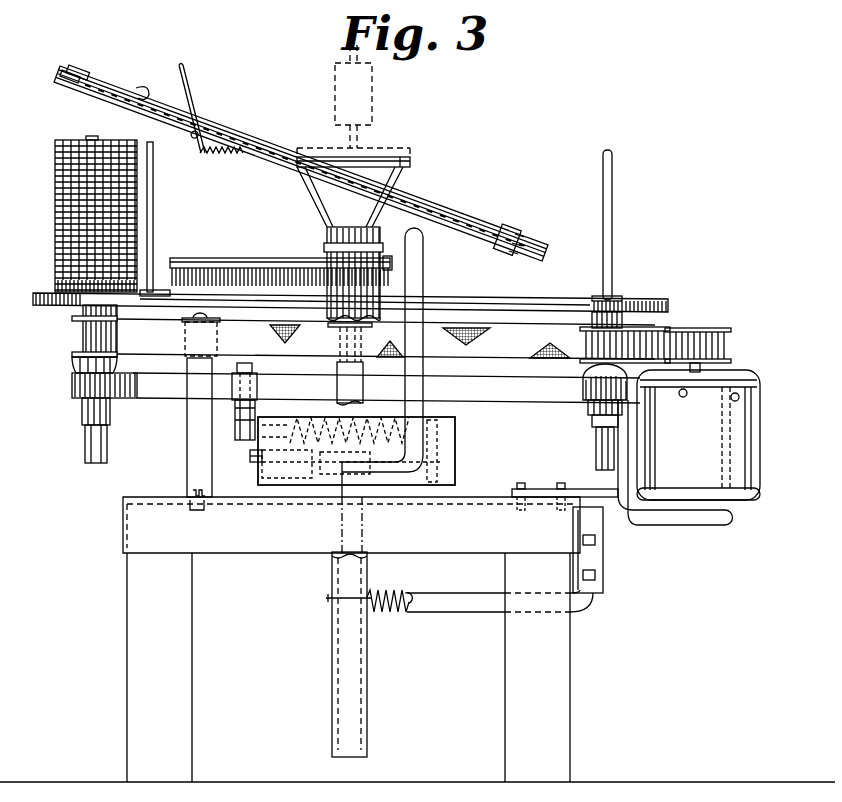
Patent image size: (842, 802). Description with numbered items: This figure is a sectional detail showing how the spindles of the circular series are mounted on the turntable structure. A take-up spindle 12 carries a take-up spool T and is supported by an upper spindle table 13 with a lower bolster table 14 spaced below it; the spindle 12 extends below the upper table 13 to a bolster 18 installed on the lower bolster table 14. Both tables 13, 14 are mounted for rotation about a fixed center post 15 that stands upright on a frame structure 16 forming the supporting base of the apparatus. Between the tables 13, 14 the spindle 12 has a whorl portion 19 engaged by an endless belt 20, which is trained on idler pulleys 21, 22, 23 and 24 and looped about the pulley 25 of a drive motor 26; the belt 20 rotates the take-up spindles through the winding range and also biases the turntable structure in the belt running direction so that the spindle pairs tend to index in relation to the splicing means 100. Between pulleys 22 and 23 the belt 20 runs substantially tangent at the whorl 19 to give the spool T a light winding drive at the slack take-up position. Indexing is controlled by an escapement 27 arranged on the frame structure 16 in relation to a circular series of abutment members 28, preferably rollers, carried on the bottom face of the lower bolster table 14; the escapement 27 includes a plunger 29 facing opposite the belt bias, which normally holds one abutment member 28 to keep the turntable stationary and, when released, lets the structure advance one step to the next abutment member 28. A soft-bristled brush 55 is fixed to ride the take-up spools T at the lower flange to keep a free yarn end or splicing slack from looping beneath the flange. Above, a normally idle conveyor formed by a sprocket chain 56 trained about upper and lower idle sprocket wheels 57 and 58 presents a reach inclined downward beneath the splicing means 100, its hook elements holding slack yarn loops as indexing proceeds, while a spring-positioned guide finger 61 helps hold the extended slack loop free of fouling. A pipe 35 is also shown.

The take-up spool T is at (56, 207).
The take-up spindle 12 is at (92, 143).
The upper spindle table 13 is at (646, 299).
The lower bolster table 14 is at (133, 400).
The center post 15 is at (332, 653).
The frame structure 16 is at (127, 652).
The bolster 18 is at (82, 417).
The whorl portion 19 is at (74, 357).
The endless belt 20 is at (83, 334).
The idler pulley 21 is at (187, 357).
The idler pulley 22 is at (337, 365).
The idler pulley 23 is at (585, 369).
The idler pulley 24 is at (674, 331).
The drive motor pulley 25 is at (744, 328).
The drive motor 26 is at (750, 374).
The escapement 27 is at (460, 455).
The abutment member 28 is at (241, 426).
The plunger 29 is at (256, 458).
The pipe 35 is at (427, 265).
The soft-bristled brush 55 is at (270, 253).
The sprocket chain conveyor 56 is at (275, 151).
The upper idle sprocket wheel 57 is at (64, 80).
The lower idle sprocket wheel 58 is at (535, 258).
The guide finger 61 is at (190, 72).
The splicing means 100 is at (420, 156).